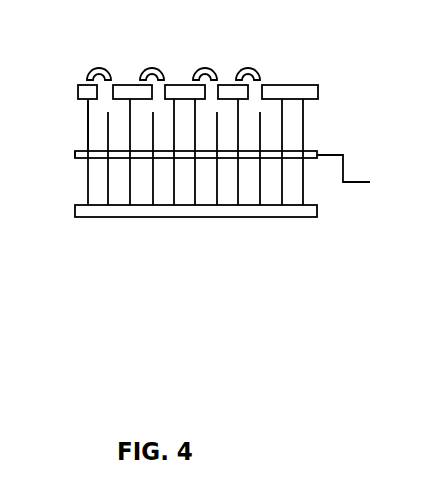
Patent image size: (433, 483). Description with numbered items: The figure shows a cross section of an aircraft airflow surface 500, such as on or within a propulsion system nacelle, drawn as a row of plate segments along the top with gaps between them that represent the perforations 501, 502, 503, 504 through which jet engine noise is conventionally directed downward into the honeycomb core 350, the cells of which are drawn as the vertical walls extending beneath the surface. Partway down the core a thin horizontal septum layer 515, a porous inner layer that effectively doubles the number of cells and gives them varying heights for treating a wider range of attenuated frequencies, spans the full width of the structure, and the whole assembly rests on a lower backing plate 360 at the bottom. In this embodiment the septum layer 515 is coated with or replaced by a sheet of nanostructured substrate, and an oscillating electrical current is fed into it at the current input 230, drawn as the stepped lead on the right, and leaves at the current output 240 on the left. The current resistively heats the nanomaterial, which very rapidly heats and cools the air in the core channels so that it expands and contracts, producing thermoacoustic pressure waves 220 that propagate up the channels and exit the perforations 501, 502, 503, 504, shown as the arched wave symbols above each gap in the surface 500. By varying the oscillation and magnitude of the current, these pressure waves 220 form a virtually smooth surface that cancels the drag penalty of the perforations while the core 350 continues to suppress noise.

The pressure waves 220 is at (102, 67).
The current input 230 is at (362, 182).
The current output 240 is at (77, 158).
The honeycomb core 350 is at (90, 132).
The substrate 360 is at (317, 212).
The surface 500 is at (315, 92).
The perforation 501 is at (105, 92).
The perforation 502 is at (160, 92).
The perforation 503 is at (213, 92).
The perforation 504 is at (258, 91).
The septum layer 515 is at (315, 152).